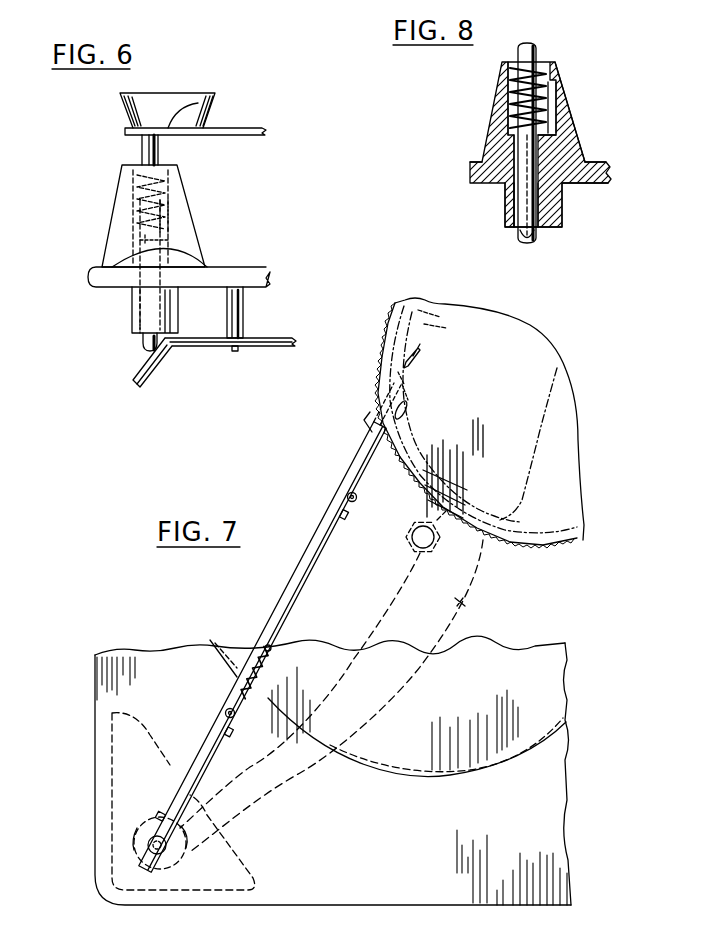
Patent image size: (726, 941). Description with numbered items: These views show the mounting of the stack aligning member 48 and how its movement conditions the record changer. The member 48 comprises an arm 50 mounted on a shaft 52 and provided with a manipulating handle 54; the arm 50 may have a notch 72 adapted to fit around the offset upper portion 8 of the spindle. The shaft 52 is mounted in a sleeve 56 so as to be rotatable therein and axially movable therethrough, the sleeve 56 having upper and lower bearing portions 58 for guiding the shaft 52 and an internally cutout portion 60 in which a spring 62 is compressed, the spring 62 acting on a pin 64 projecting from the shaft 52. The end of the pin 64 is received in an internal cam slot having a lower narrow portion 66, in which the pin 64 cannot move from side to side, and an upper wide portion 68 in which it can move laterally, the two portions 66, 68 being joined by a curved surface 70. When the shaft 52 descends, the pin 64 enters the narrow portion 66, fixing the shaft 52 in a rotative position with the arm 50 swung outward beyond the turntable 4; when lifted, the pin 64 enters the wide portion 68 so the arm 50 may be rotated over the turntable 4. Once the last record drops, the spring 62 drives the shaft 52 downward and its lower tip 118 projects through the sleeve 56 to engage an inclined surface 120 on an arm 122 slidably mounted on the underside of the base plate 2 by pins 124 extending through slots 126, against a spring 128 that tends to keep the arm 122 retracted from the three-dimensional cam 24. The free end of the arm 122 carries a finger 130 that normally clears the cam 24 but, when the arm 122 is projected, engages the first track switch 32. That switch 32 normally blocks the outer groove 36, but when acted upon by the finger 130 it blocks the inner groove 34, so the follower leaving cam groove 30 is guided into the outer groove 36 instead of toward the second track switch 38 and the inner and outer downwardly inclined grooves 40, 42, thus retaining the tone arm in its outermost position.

In FIG. 6, the base plate 2 is at (252, 270).
In FIG. 8, the base plate 2 is at (599, 183).
In FIG. 7, the base plate 2 is at (560, 813).
In FIG. 7, the turntable 4 is at (508, 763).
In FIG. 7, the offset upper portion 8 is at (412, 522).
In FIG. 7, the three-dimensional cam 24 is at (571, 500).
In FIG. 7, the cam groove 30 is at (462, 478).
In FIG. 7, the first track switch 32 is at (407, 407).
In FIG. 7, the inner groove 34 is at (410, 389).
In FIG. 7, the outer groove 36 is at (408, 335).
In FIG. 7, the second track switch 38 is at (418, 358).
In FIG. 7, the inner downwardly inclined groove 40 is at (422, 340).
In FIG. 7, the outer downwardly inclined groove 42 is at (427, 318).
In FIG. 6, the stack aligning member 48 is at (251, 133).
In FIG. 7, the stack aligning member 48 is at (300, 776).
In FIG. 6, the arm 50 is at (256, 127).
In FIG. 7, the arm 50 is at (463, 603).
In FIG. 6, the shaft 52 is at (160, 152).
In FIG. 8, the shaft 52 is at (538, 49).
In FIG. 6, the manipulating handle 54 is at (212, 108).
In FIG. 6, the sleeve 56 is at (183, 217).
In FIG. 8, the sleeve 56 is at (562, 91).
In FIG. 7, the sleeve 56 is at (139, 833).
In FIG. 6, the bearing portions 58 is at (142, 164).
In FIG. 8, the bearing portions 58 is at (503, 61).
In FIG. 6, the internally cutout portion 60 is at (120, 178).
In FIG. 8, the internally cutout portion 60 is at (512, 87).
In FIG. 6, the spring 62 is at (166, 185).
In FIG. 8, the spring 62 is at (541, 75).
In FIG. 6, the pin 64 is at (176, 243).
In FIG. 8, the pin 64 is at (549, 135).
In FIG. 8, the lower narrow portion 66 is at (554, 198).
In FIG. 6, the upper wide portion 68 is at (172, 222).
In FIG. 8, the upper wide portion 68 is at (548, 116).
In FIG. 8, the curved surface 70 is at (574, 143).
In FIG. 7, the notch 72 is at (410, 545).
In FIG. 6, the lower tip 118 is at (141, 345).
In FIG. 8, the lower tip 118 is at (537, 238).
In FIG. 7, the lower tip 118 is at (177, 860).
In FIG. 6, the inclined surface 120 is at (151, 365).
In FIG. 7, the inclined surface 120 is at (162, 812).
In FIG. 6, the arm 122 is at (290, 347).
In FIG. 7, the arm 122 is at (301, 567).
In FIG. 6, the pins 124 is at (244, 310).
In FIG. 7, the pins 124 is at (348, 496).
In FIG. 7, the slots 126 is at (348, 514).
In FIG. 7, the spring 128 is at (249, 664).
In FIG. 7, the finger 130 is at (382, 402).